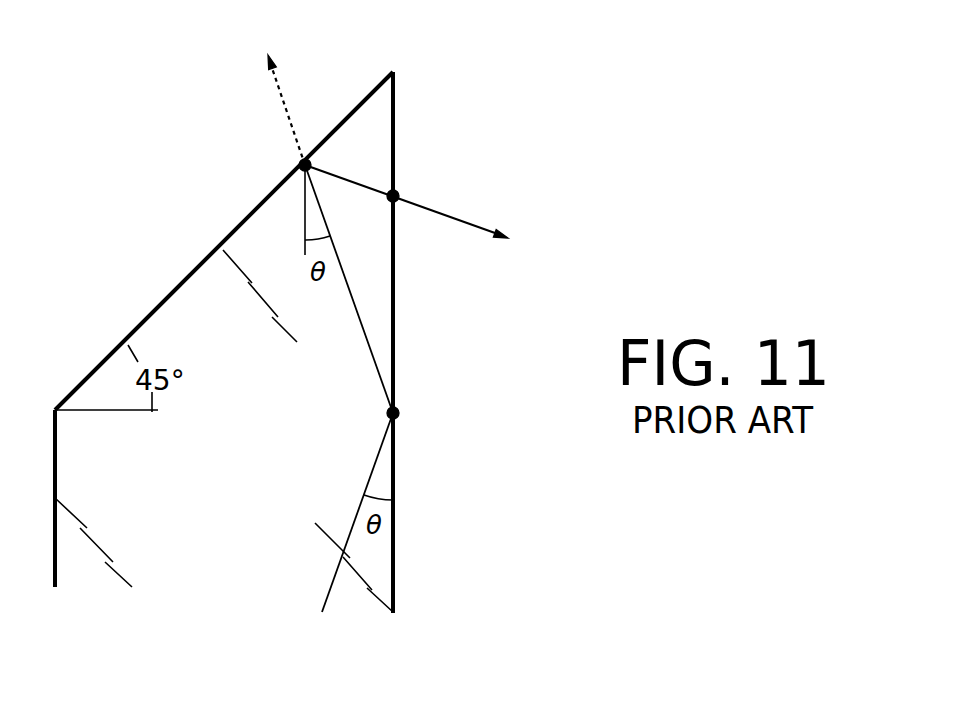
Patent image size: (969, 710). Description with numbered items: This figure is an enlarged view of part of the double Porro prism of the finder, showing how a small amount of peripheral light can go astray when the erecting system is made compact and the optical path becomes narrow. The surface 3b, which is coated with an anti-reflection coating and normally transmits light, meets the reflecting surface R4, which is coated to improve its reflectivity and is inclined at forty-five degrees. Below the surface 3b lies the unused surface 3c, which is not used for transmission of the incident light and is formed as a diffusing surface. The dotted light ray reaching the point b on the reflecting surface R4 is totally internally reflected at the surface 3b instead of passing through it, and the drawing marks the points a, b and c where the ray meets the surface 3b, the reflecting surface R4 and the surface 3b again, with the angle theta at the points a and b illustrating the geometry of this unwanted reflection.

The surface 3b is at (457, 73).
The unused surface 3c is at (457, 420).
The reflecting surface R4 is at (195, 270).
The incident point a is at (389, 411).
The reflection point b is at (299, 165).
The transmission point c is at (398, 196).